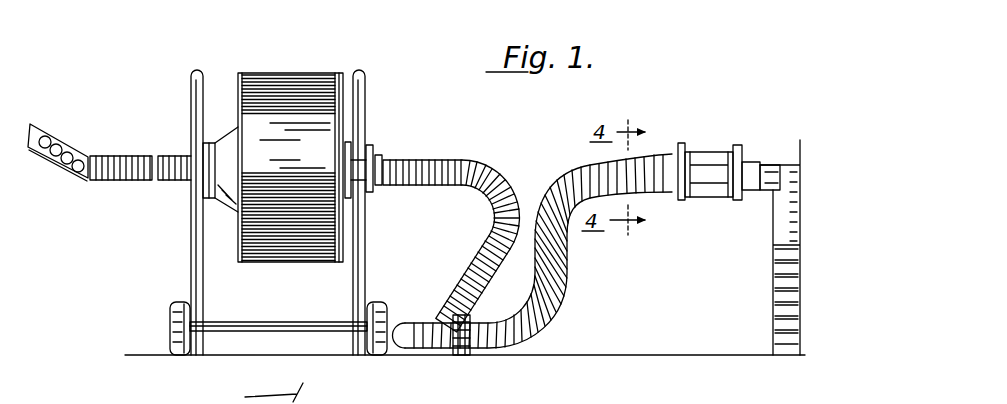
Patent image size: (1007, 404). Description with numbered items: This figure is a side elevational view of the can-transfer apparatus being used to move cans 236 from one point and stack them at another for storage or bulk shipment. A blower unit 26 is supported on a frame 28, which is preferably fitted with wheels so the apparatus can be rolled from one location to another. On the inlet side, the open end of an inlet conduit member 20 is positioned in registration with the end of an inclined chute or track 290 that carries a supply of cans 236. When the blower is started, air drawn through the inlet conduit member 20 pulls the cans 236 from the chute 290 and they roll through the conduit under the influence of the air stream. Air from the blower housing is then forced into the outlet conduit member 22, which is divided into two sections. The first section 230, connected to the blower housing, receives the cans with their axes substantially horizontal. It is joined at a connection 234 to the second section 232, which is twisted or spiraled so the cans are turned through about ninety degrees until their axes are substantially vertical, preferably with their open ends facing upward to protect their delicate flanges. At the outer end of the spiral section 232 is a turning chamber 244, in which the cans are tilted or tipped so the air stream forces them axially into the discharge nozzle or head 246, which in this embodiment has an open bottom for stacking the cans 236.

The inlet conduit member 20 is at (102, 152).
The outlet conduit member 22 is at (451, 219).
The blower unit 26 is at (286, 70).
The frame 28 is at (293, 320).
The first section of outlet tube 230 is at (443, 187).
The twisted section of outlet tube 232 is at (553, 166).
The connection between outlet tube sections 234 is at (461, 356).
The cans 236 is at (414, 223).
The turning chamber 244 is at (707, 146).
The discharge nozzle or head 246 is at (771, 161).
The inclined chute or track 290 is at (60, 168).